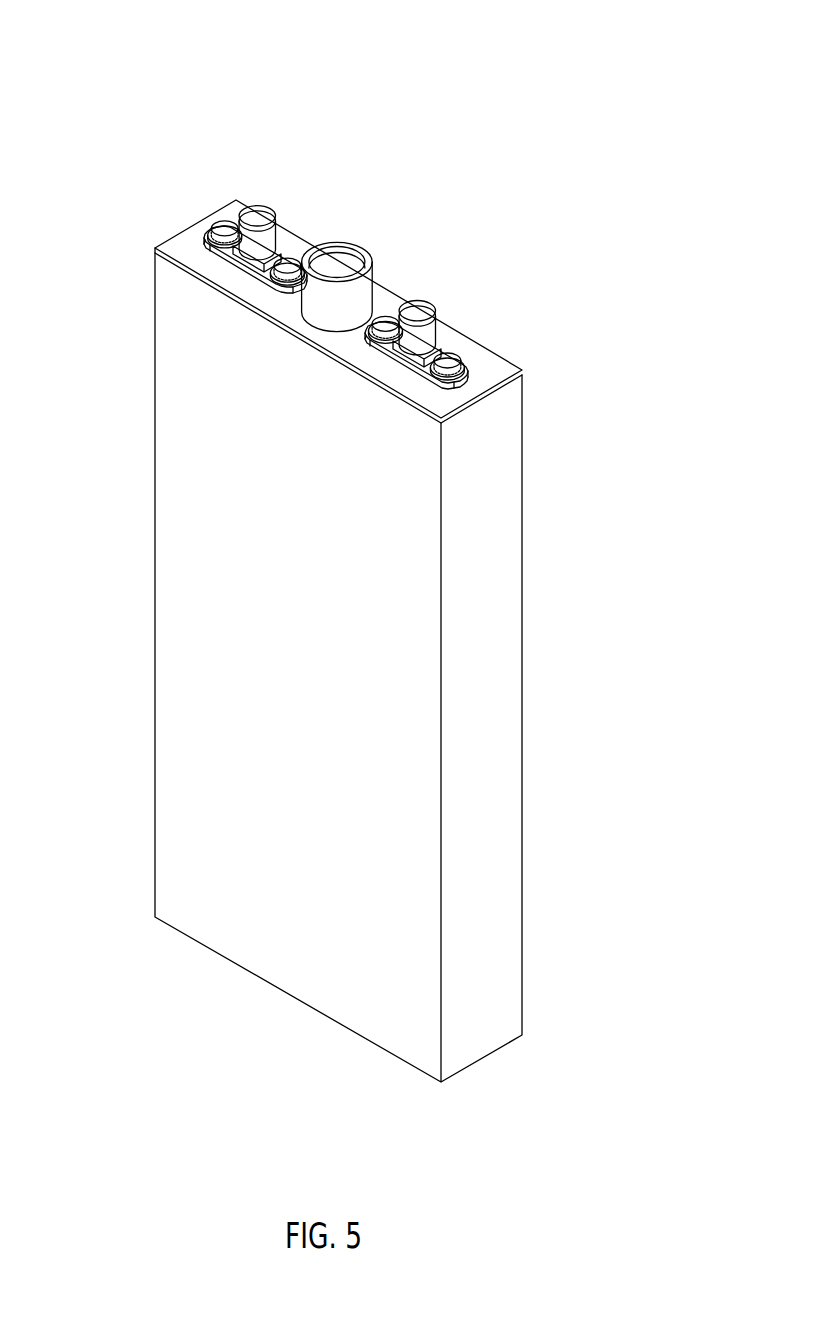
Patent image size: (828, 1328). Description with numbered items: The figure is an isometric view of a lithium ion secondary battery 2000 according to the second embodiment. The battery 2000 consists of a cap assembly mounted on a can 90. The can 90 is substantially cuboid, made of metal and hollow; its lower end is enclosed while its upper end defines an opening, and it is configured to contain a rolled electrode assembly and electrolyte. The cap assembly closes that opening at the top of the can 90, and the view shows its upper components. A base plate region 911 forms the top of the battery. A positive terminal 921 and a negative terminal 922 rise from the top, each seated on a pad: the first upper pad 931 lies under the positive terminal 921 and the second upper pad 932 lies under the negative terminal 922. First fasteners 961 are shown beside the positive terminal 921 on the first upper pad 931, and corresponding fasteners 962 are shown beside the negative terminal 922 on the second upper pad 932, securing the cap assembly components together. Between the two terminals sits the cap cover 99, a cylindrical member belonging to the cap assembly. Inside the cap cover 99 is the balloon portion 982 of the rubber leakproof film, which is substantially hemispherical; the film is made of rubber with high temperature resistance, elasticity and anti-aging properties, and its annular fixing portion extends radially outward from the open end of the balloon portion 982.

The lithium ion secondary battery 2000 is at (372, 42).
The can 90 is at (392, 748).
The cover plate 911 is at (283, 313).
The positive terminal 921 is at (253, 213).
The negative terminal 922 is at (420, 303).
The first upper pad 931 is at (227, 267).
The second upper pad 932 is at (472, 373).
The first fasteners 961 is at (222, 230).
The second fastening cap 962 is at (448, 355).
The cap cover 99 is at (353, 253).
The balloon portion 982 is at (333, 260).